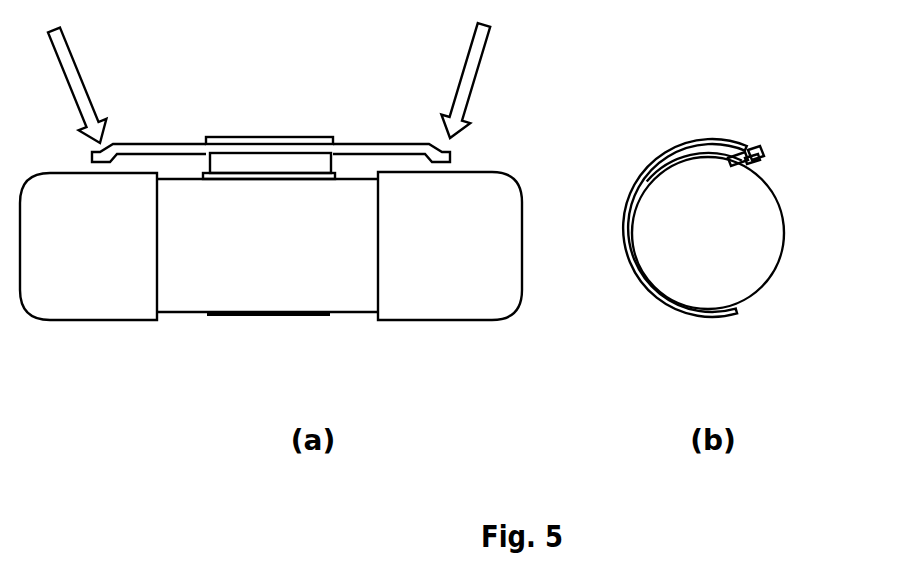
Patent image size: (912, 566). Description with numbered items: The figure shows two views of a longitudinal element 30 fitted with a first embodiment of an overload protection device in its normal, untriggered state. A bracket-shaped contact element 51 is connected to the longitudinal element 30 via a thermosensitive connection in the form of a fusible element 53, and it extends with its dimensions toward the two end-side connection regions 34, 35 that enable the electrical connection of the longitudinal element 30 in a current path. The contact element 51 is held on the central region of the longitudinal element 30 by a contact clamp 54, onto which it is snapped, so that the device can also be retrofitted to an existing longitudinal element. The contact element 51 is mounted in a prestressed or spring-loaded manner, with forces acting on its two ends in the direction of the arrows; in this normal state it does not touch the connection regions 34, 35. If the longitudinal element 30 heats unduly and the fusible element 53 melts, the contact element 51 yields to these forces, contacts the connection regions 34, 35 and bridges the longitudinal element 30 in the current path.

The longitudinal element 30 is at (210, 275).
The connection region 34 is at (77, 307).
The connection region 35 is at (460, 300).
The contact element 51 is at (163, 152).
The fusible element 53 is at (245, 163).
The contact clamp 54 is at (315, 137).